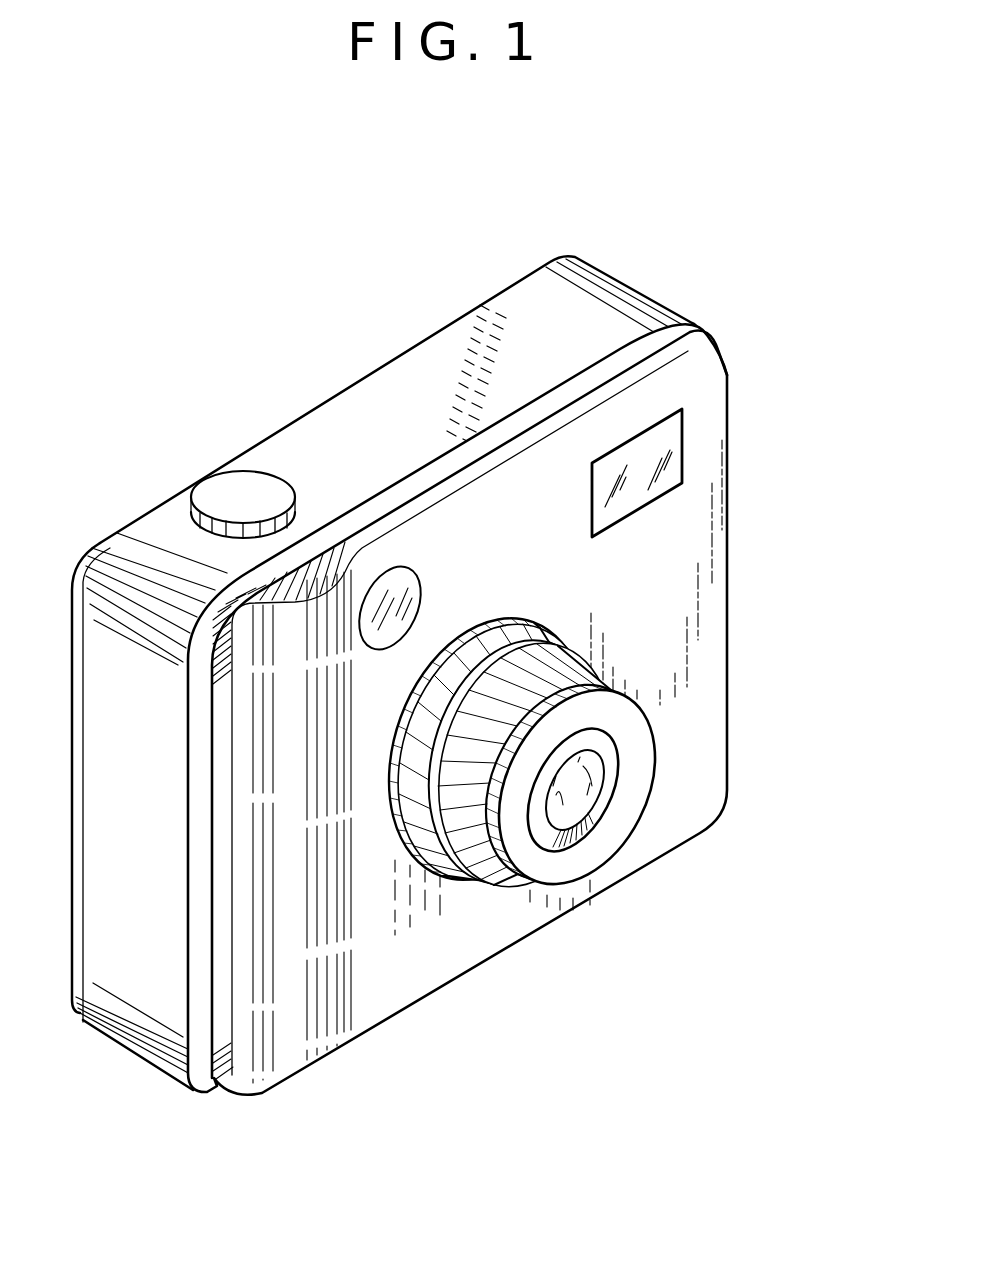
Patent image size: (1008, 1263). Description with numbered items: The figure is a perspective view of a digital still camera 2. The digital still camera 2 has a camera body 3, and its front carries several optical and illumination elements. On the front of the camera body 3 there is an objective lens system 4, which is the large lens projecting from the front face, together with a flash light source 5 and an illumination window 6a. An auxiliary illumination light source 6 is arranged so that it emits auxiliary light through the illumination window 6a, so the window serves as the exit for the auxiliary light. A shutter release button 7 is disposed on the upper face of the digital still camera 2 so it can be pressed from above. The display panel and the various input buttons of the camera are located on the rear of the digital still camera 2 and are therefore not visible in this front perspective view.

The digital still camera 2 is at (396, 633).
The camera body 3 is at (525, 709).
The objective lens system 4 is at (575, 808).
The flash light source 5 is at (668, 437).
The auxiliary illumination light source 6 is at (435, 537).
The illumination window 6a is at (410, 602).
The shutter release button 7 is at (243, 488).